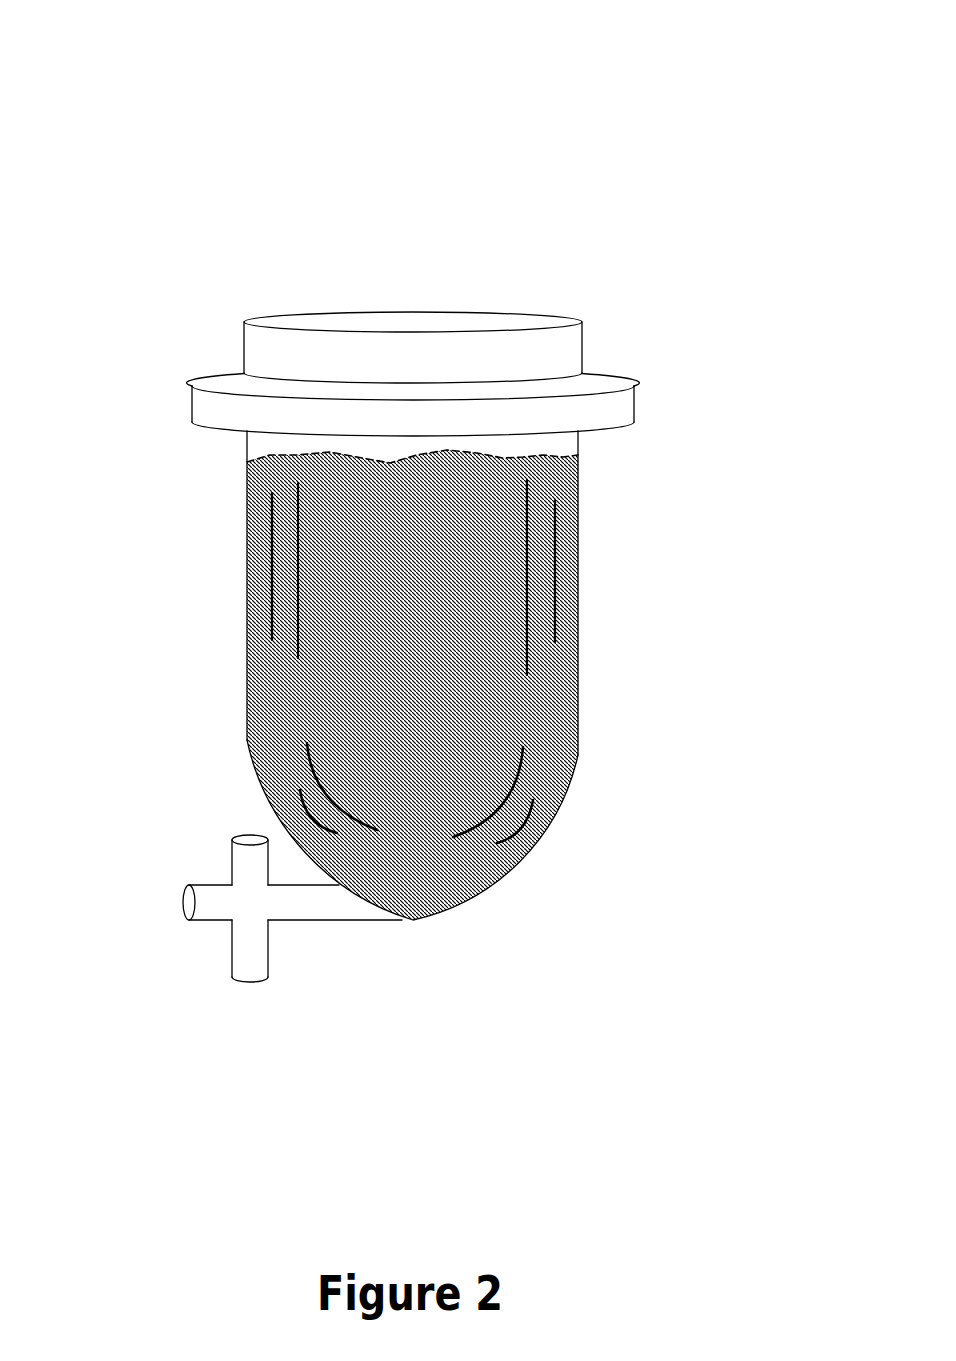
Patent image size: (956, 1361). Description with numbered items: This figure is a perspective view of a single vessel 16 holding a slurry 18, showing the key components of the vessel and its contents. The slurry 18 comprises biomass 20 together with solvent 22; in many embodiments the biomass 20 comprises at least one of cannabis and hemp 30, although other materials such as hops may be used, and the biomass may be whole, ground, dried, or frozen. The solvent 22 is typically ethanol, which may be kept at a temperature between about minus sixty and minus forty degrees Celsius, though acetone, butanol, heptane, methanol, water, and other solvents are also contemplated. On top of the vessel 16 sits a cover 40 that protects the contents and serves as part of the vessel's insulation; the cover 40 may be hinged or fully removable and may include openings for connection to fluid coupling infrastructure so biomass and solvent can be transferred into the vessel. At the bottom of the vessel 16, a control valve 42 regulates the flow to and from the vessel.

The vessel 16 is at (293, 135).
The cover 40 is at (406, 307).
The slurry 18 is at (273, 640).
The biomass 20 is at (557, 642).
The solvent 22 is at (275, 738).
The at least one of cannabis and hemp 30 is at (557, 757).
The control valve 42 is at (250, 978).